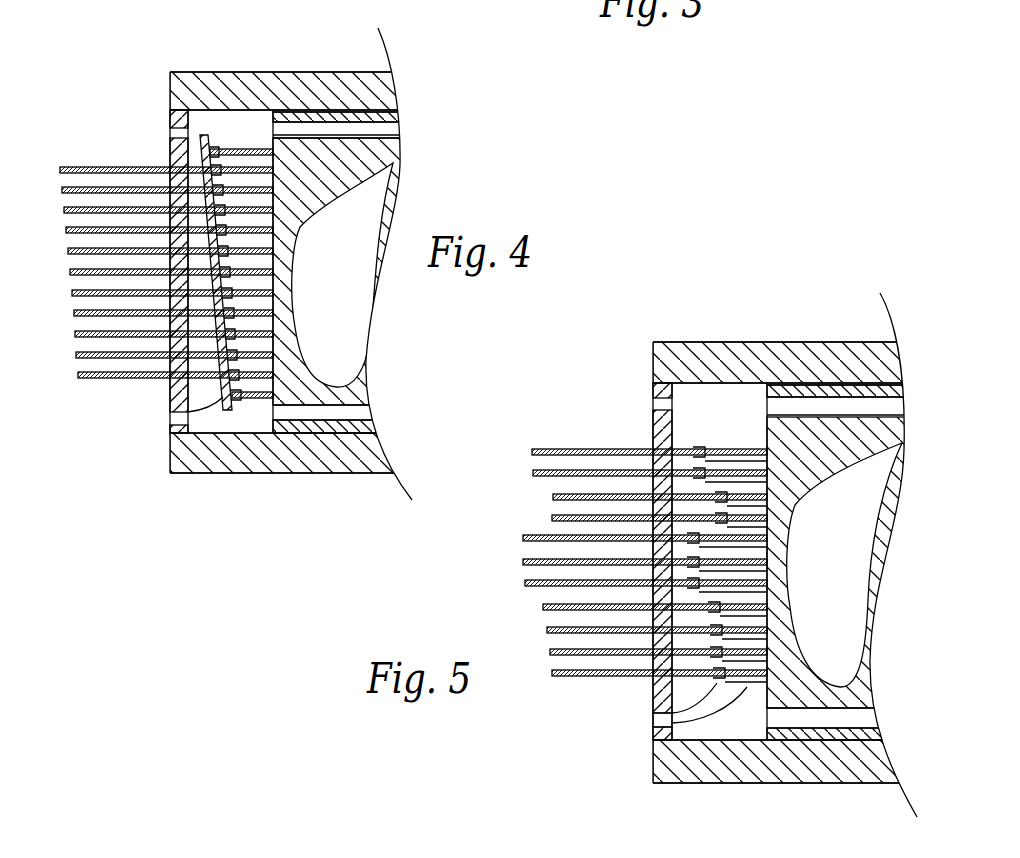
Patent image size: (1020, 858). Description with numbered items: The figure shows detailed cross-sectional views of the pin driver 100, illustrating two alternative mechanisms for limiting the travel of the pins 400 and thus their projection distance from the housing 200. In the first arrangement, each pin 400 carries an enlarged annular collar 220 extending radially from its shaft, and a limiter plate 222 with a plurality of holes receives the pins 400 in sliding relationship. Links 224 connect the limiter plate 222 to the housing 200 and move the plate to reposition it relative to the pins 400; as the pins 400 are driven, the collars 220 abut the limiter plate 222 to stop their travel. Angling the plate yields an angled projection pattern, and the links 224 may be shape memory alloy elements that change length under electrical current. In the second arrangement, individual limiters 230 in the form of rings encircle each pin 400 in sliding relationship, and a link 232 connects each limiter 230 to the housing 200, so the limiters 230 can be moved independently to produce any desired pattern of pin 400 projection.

In FIG. 4, the pin driver 100 is at (236, 278).
In FIG. 4, the housing 200 is at (238, 465).
In FIG. 5, the housing 200 is at (737, 353).
In FIG. 4, the annular collar 220 is at (214, 150).
In FIG. 5, the annular collar 220 is at (707, 443).
In FIG. 4, the limiter plate 222 is at (188, 412).
In FIG. 4, the link 224 is at (247, 148).
In FIG. 5, the limiter 230 is at (667, 720).
In FIG. 5, the link 232 is at (672, 713).
In FIG. 4, the pin 400 is at (53, 352).
In FIG. 5, the pin 400 is at (495, 568).